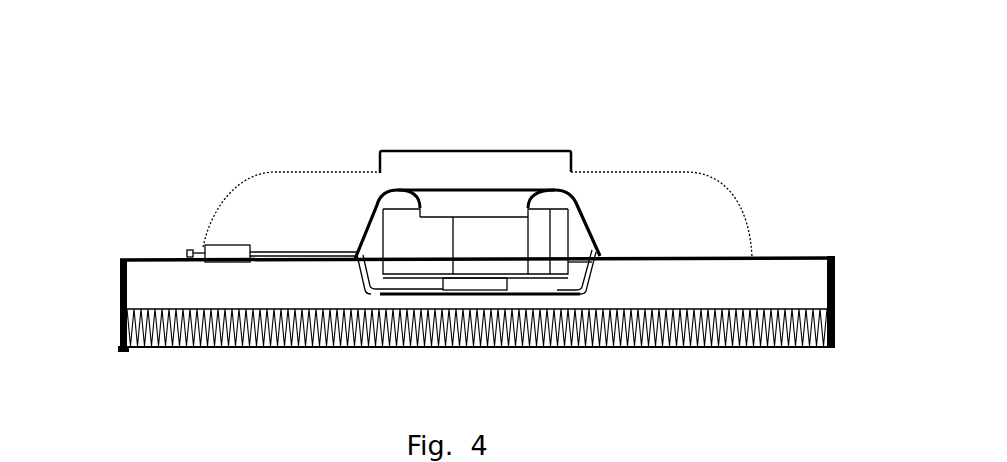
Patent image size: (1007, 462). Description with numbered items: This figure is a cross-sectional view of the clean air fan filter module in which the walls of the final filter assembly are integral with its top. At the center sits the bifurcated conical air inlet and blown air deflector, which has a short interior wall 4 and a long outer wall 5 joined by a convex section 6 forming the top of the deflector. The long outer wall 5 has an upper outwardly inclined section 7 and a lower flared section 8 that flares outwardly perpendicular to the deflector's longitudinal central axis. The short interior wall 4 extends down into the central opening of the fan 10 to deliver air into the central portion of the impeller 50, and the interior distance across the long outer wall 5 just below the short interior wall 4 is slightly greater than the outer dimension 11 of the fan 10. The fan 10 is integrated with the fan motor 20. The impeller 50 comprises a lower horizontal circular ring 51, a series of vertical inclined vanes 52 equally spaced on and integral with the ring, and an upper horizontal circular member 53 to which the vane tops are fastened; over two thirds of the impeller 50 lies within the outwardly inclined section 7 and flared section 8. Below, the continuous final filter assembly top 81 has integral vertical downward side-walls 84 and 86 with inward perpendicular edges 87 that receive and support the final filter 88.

The short interior wall 4 is at (440, 200).
The long outer wall 5 is at (367, 225).
The convex section 6 is at (394, 192).
The upper outwardly inclined section 7 is at (594, 262).
The lower flared section 8 is at (615, 257).
The fan 10 is at (538, 277).
The outer dimension 11 is at (583, 218).
The fan motor 20 is at (502, 285).
The impeller 50 is at (408, 245).
The lower horizontal circular ring 51 is at (405, 270).
The vertical inclined vanes 52 is at (478, 238).
The upper horizontal circular member 53 is at (555, 205).
The final filter assembly top 81 is at (805, 257).
The downward side-wall 84 is at (116, 271).
The downward side-wall 86 is at (837, 275).
The inward perpendicular edges 87 is at (126, 350).
The final filter 88 is at (748, 322).